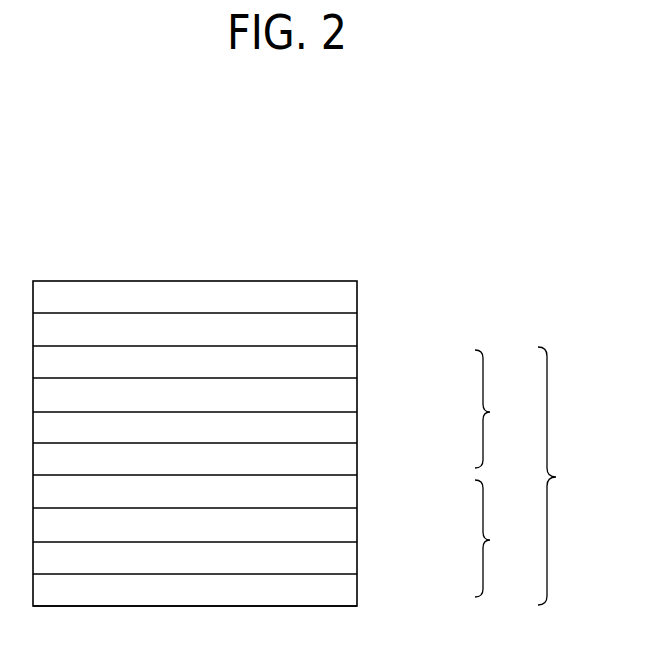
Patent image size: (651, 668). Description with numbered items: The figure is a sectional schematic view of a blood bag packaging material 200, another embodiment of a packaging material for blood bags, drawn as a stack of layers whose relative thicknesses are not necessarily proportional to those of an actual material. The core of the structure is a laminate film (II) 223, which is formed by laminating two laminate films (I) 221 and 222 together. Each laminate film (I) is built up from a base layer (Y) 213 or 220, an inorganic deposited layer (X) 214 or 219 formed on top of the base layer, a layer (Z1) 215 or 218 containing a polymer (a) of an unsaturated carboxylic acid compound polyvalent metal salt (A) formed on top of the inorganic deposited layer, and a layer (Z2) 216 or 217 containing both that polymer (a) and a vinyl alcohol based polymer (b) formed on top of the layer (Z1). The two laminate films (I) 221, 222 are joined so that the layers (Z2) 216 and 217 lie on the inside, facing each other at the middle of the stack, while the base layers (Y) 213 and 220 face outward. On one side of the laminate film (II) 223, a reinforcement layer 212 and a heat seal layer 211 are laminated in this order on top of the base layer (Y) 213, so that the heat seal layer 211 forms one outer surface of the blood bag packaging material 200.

The blood bag packaging material 200 is at (196, 258).
The heat seal layer 211 is at (340, 296).
The reinforcement layer 212 is at (340, 328).
The base layer (Y) 213 is at (340, 360).
The inorganic deposited layer (X) 214 is at (340, 393).
The layer (Z1) 215 is at (340, 425).
The layer (Z2) 216 is at (340, 458).
The layer (Z2) 217 is at (340, 491).
The layer (Z1) 218 is at (340, 523).
The inorganic deposited layer (X) 219 is at (340, 556).
The base layer (Y) 220 is at (340, 589).
The laminate film (I) 221 is at (505, 409).
The laminate film (I) 222 is at (505, 538).
The laminate film (II) 223 is at (568, 476).